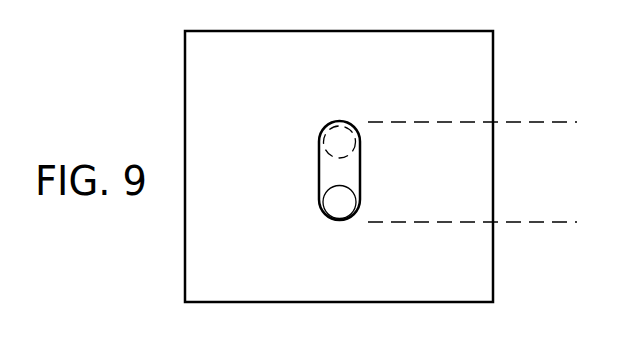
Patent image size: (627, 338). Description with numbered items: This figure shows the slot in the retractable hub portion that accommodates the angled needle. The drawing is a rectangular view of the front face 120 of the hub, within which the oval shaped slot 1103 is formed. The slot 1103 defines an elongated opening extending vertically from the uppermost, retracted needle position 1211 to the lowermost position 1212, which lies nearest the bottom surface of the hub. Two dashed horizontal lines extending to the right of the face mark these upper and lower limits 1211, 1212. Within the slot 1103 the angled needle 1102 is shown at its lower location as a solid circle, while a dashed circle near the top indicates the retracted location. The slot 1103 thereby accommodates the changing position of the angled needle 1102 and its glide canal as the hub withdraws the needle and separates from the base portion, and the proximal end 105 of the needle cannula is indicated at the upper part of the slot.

The front face 120 is at (257, 277).
The proximal end 105 is at (319, 140).
The slot 1103 is at (319, 168).
The angled needle 1102 is at (338, 208).
The retracted needle position 1211 is at (551, 121).
The lowermost position 1212 is at (551, 226).